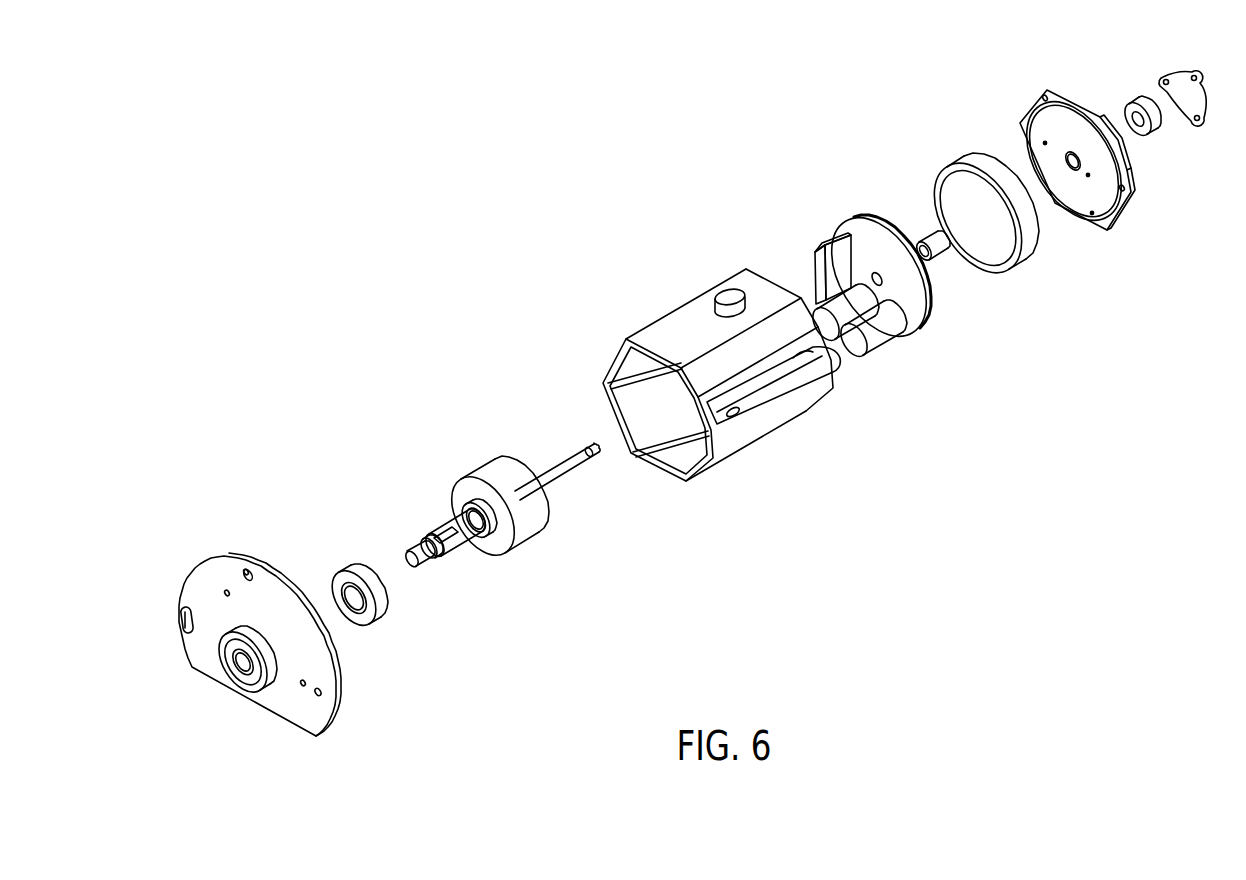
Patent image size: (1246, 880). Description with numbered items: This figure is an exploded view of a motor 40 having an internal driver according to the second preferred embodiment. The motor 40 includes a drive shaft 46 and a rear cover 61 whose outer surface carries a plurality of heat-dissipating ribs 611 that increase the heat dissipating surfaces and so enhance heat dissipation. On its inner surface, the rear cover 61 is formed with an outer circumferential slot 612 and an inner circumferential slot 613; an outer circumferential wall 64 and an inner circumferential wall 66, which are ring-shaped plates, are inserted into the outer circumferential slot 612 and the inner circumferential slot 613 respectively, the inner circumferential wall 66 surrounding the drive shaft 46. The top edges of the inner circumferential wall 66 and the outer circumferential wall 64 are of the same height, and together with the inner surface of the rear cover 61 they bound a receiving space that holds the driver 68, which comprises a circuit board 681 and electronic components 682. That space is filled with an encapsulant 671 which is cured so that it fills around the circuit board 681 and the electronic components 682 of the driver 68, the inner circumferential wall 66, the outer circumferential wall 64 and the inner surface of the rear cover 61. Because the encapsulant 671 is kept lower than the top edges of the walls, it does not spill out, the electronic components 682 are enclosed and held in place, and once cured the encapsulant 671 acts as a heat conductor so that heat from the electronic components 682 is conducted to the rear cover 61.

The motor 40 is at (506, 314).
The drive shaft 46 is at (440, 523).
The rear cover 61 is at (1058, 92).
The heat-dissipating ribs 611 is at (1126, 160).
The outer circumferential slot 612 is at (1095, 222).
The inner circumferential slot 613 is at (1074, 172).
The outer circumferential wall 64 is at (1035, 252).
The inner circumferential wall 66 is at (942, 258).
The driver 68 is at (847, 208).
The circuit board 681 is at (875, 216).
The electronic components 682 is at (810, 267).
The encapsulant 671 is at (910, 307).